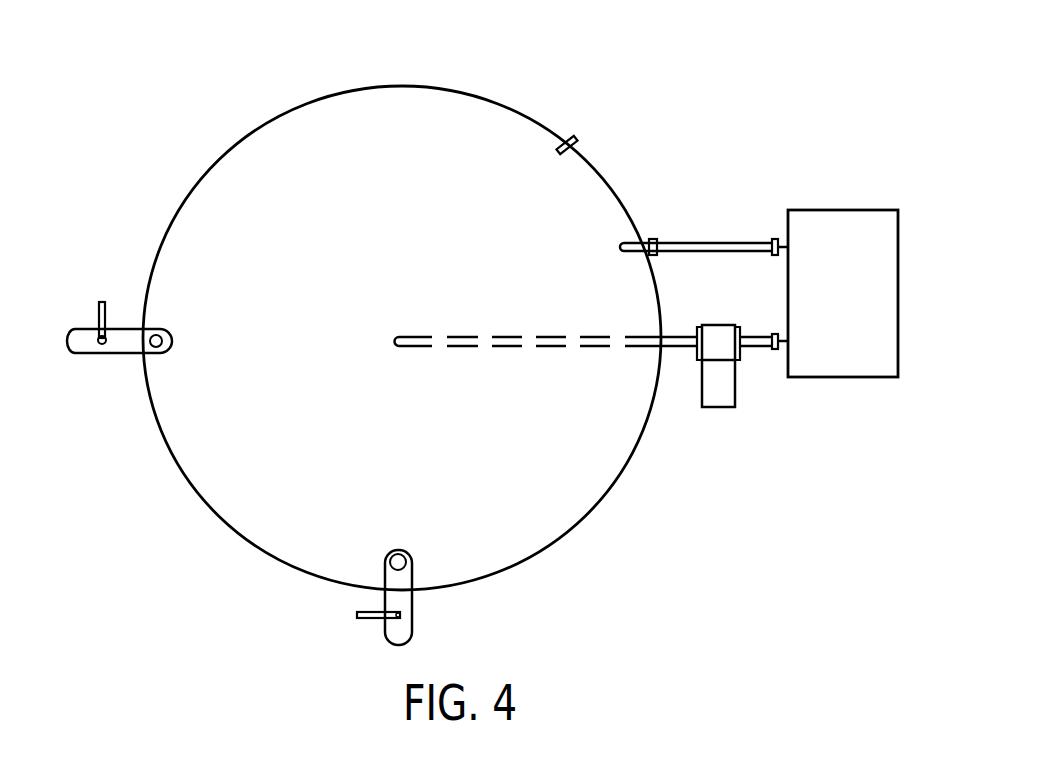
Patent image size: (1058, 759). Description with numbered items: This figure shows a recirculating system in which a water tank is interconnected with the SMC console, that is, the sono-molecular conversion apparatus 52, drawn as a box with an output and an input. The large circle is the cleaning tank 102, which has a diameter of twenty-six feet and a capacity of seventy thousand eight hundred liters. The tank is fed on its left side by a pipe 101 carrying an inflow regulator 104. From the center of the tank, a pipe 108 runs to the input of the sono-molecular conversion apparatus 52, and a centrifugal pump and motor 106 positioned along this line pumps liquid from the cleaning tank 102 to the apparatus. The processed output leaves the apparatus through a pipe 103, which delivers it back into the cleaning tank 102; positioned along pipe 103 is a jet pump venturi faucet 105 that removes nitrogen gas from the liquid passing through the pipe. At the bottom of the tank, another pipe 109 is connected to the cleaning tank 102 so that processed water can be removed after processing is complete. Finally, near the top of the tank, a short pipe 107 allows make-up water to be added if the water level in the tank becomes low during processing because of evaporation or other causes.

The sono-molecular conversion apparatus 52 is at (847, 378).
The pipe 101 is at (87, 358).
The cleaning tank 102 is at (220, 523).
The pipe 103 is at (619, 252).
The inflow regulator 104 is at (102, 300).
The jet pump venturi faucet 105 is at (670, 242).
The centrifugal pump and motor 106 is at (725, 383).
The pipe 107 is at (578, 147).
The pipe 108 is at (412, 347).
The pipe 109 is at (413, 627).